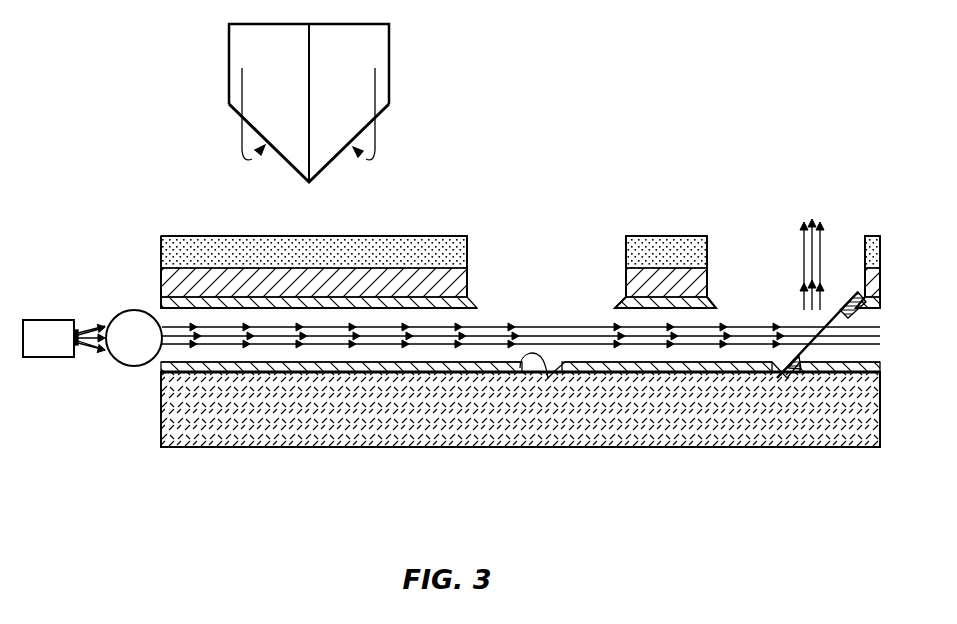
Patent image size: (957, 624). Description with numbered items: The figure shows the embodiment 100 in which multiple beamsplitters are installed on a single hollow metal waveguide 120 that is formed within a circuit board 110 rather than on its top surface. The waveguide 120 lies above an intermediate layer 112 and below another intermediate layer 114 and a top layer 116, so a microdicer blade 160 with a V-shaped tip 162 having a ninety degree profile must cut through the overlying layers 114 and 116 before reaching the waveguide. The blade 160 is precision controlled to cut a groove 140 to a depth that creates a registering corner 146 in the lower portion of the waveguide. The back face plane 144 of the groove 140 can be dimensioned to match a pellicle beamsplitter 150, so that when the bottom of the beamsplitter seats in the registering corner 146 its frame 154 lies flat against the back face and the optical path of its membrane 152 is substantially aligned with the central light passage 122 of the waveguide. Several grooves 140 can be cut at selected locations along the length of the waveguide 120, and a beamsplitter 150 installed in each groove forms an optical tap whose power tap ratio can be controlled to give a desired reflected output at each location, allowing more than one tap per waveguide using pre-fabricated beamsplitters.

The embodiment 100 is at (714, 99).
The circuit board 110 is at (464, 445).
The intermediate layer 112 is at (275, 448).
The intermediate layer 114 is at (287, 250).
The top layer 116 is at (162, 237).
The hollow metal waveguide 120 is at (161, 366).
The central light passage 122 is at (529, 445).
The groove 140 is at (606, 222).
The back face plane 144 is at (616, 307).
The registering corner 146 is at (522, 364).
The pellicle beamsplitter 150 is at (782, 302).
The membrane 152 is at (836, 312).
The frame 154 is at (778, 382).
The microdicer blade 160 is at (228, 92).
The V-shaped tip 162 is at (310, 184).